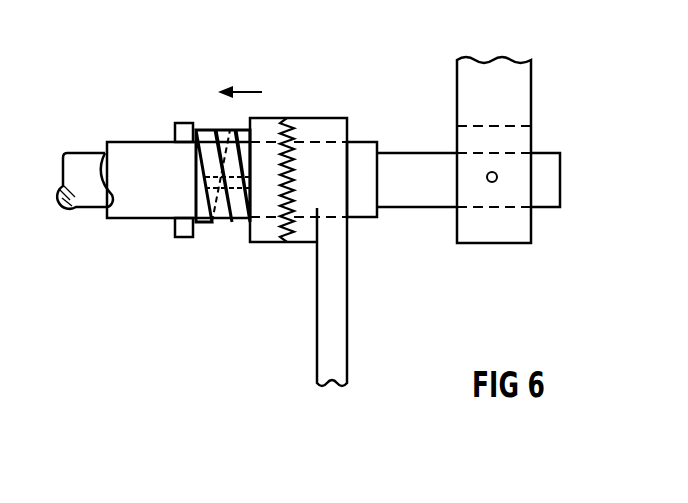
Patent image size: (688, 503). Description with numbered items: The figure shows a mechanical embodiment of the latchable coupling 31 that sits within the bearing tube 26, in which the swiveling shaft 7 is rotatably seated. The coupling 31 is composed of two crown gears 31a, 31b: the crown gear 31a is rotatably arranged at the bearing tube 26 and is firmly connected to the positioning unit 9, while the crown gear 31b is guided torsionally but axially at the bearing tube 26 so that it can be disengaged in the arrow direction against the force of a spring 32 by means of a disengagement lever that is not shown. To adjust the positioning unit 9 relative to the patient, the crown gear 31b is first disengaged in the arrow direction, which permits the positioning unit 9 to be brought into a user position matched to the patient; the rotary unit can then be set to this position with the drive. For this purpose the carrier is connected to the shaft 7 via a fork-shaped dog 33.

The swiveling shaft 7 is at (83, 170).
The bearing tube 26 is at (137, 160).
The spring 32 is at (220, 135).
The latchable coupling 31 is at (297, 168).
The crown gear 31a is at (320, 130).
The crown gear 31b is at (265, 232).
The positioning unit 9 is at (328, 355).
The fork-shaped dog 33 is at (517, 137).